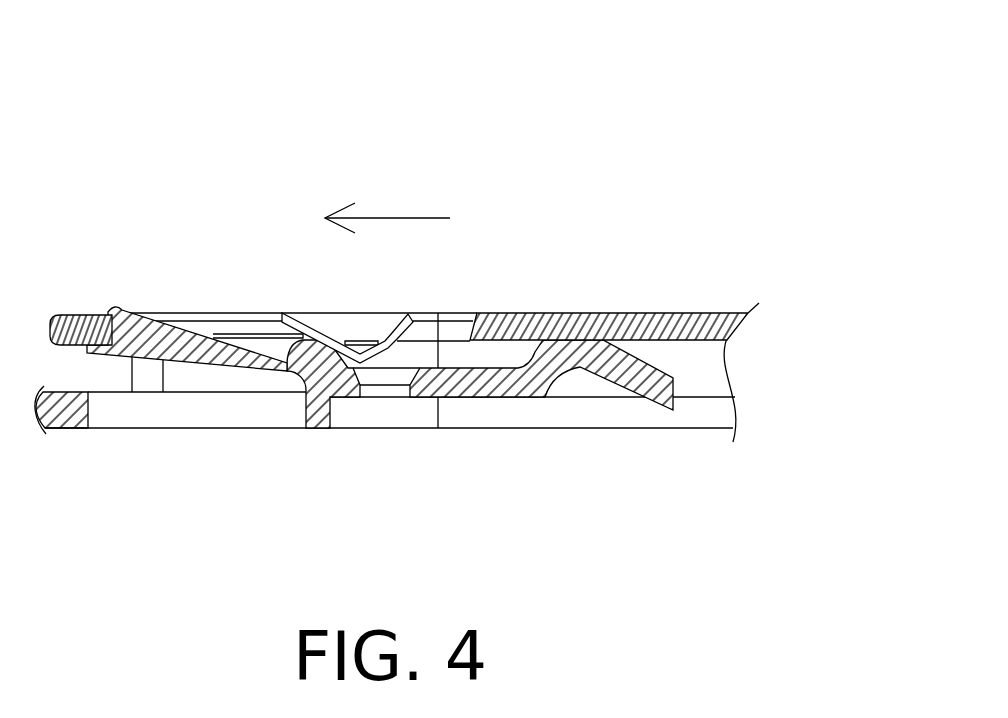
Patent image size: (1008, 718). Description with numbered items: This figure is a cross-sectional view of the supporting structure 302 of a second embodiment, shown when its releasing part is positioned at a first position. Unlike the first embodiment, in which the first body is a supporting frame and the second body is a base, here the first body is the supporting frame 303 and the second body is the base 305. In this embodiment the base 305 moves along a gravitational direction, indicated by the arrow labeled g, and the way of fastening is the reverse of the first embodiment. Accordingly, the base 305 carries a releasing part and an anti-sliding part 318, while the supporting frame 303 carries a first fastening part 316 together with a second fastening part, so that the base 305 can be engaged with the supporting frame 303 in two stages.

The supporting structure 302 is at (868, 76).
The supporting frame 303 is at (202, 412).
The base 305 is at (712, 312).
The first fastening part 316 is at (72, 312).
The anti-sliding part 318 is at (522, 353).